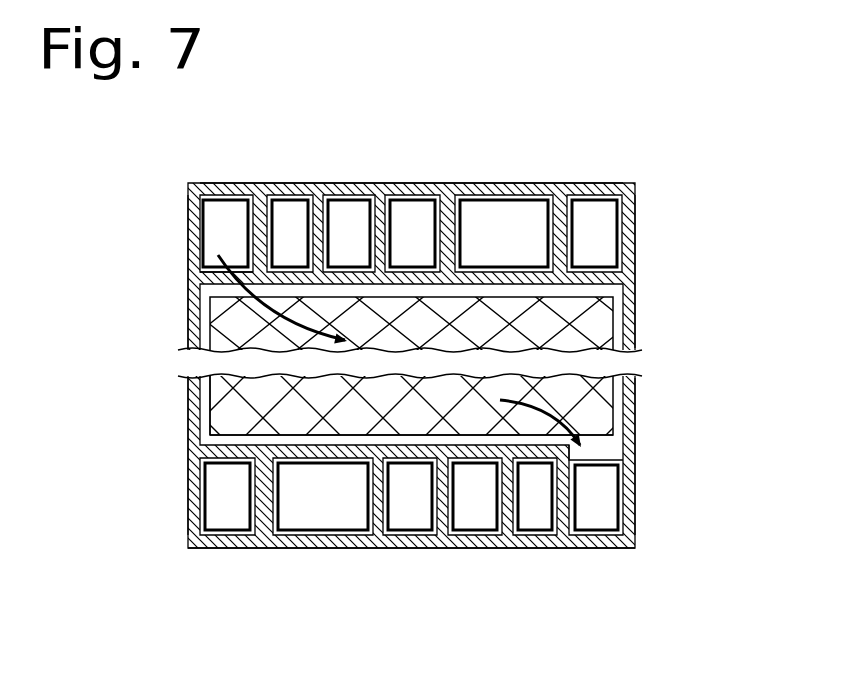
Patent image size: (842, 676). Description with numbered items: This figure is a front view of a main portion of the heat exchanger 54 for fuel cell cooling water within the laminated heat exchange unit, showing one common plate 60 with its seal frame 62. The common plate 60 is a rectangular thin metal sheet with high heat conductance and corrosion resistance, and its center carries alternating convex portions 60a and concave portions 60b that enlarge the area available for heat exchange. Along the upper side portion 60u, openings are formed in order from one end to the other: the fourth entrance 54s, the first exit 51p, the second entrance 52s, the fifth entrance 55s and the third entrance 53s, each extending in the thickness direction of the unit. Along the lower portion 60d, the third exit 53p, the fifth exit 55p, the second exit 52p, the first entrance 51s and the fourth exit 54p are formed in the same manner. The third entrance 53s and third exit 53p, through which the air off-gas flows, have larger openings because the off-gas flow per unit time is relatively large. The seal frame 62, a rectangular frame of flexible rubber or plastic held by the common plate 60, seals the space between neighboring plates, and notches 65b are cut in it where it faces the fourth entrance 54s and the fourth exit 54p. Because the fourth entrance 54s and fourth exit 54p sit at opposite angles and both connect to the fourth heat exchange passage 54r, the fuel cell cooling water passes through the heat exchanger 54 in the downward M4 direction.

The first exit 51p is at (292, 217).
The first entrance 51s is at (528, 518).
The second exit 52p is at (467, 513).
The second entrance 52s is at (350, 218).
The third exit 53p is at (330, 518).
The third entrance 53s is at (485, 215).
The heat exchanger for fuel cell cooling water 54 is at (640, 327).
The fourth exit 54p is at (605, 497).
The fourth heat exchange passage 54r is at (580, 403).
The fourth entrance 54s is at (213, 217).
The fifth exit 55p is at (410, 518).
The fifth entrance 55s is at (417, 215).
The common plate 60 is at (620, 318).
The convex portions 60a is at (253, 397).
The concave portions 60b is at (230, 445).
The upper side portion 60u is at (558, 182).
The lower portion 60d is at (634, 550).
The seal frame 62 is at (633, 272).
The notches 65b is at (218, 275).
The M4 direction M4 is at (247, 327).